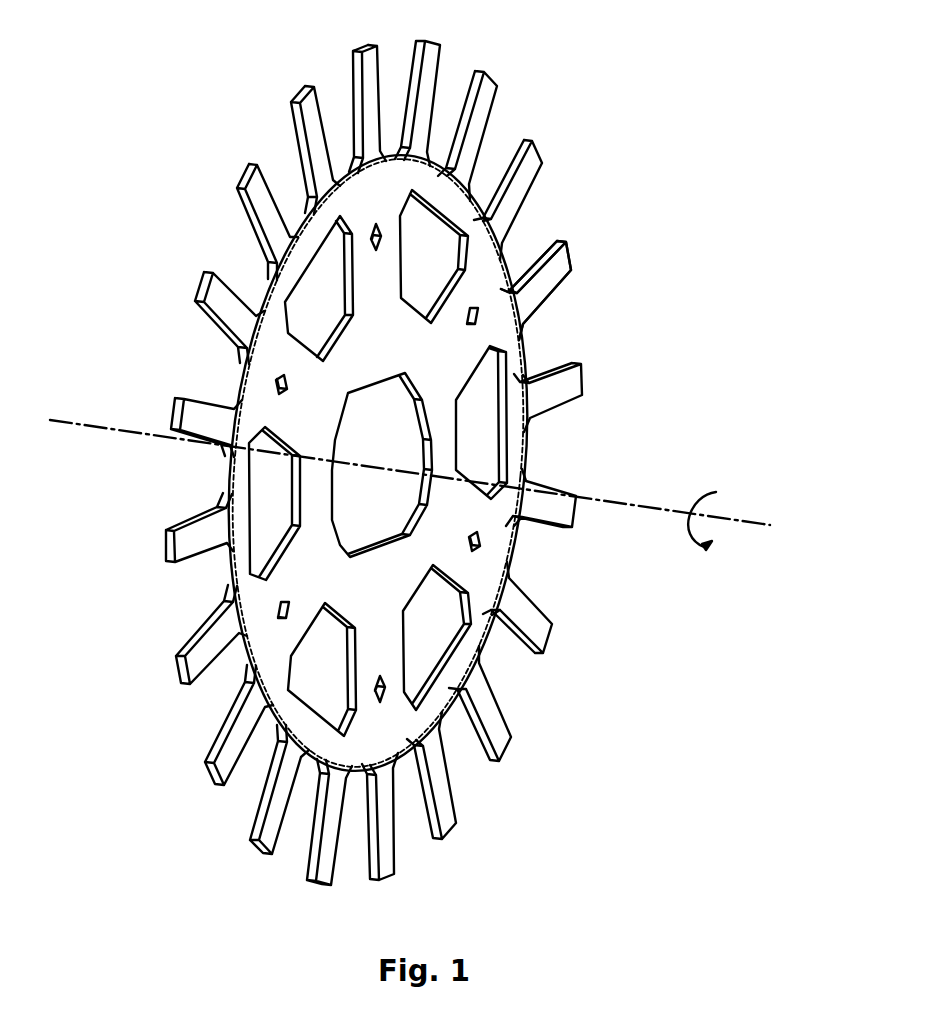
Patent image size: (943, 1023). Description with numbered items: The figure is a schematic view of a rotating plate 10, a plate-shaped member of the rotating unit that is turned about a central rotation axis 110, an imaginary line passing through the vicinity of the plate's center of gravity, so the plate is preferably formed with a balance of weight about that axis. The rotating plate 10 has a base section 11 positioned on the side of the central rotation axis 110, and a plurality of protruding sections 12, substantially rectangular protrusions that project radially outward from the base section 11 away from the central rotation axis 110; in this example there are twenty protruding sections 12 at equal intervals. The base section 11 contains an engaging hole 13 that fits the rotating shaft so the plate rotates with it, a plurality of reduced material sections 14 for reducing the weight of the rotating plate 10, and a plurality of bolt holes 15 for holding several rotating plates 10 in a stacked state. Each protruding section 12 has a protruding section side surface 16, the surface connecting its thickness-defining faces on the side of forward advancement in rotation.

The rotating plate 10 is at (617, 87).
The base section 11 is at (493, 542).
The protruding section 12 is at (520, 188).
The engaging hole 13 is at (383, 492).
The reduced material section 14 is at (325, 688).
The bolt hole 15 is at (475, 313).
The protruding section side surface 16 is at (302, 125).
The central rotation axis 110 is at (739, 520).